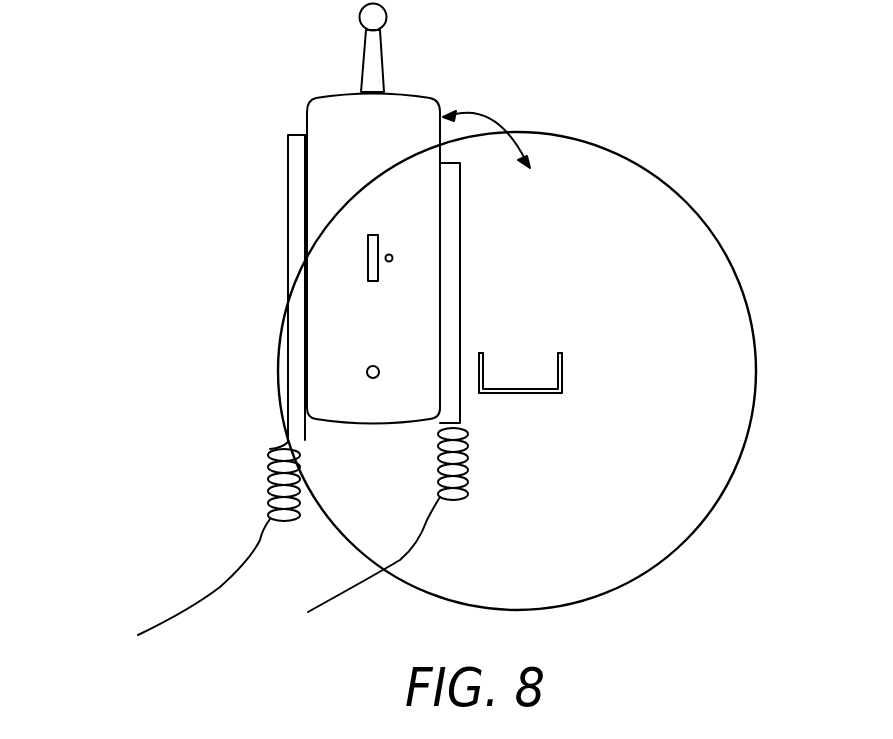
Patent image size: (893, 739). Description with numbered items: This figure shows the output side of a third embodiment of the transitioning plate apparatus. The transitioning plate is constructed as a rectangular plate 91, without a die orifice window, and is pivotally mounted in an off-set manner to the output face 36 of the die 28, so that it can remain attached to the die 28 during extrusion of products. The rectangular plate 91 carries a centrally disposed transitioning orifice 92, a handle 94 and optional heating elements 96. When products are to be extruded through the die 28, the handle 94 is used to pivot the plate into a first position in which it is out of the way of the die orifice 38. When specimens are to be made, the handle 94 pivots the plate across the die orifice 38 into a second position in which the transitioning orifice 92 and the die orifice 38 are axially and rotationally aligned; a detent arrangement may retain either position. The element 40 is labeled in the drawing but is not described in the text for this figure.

The helmet shell 28 is at (643, 167).
The head covering 36 is at (686, 234).
The clip 38 is at (562, 369).
The mounting assembly 40 is at (298, 200).
The housing 91 is at (420, 93).
The switch 92 is at (378, 250).
The antenna 94 is at (383, 66).
The brackets 96 is at (288, 275).